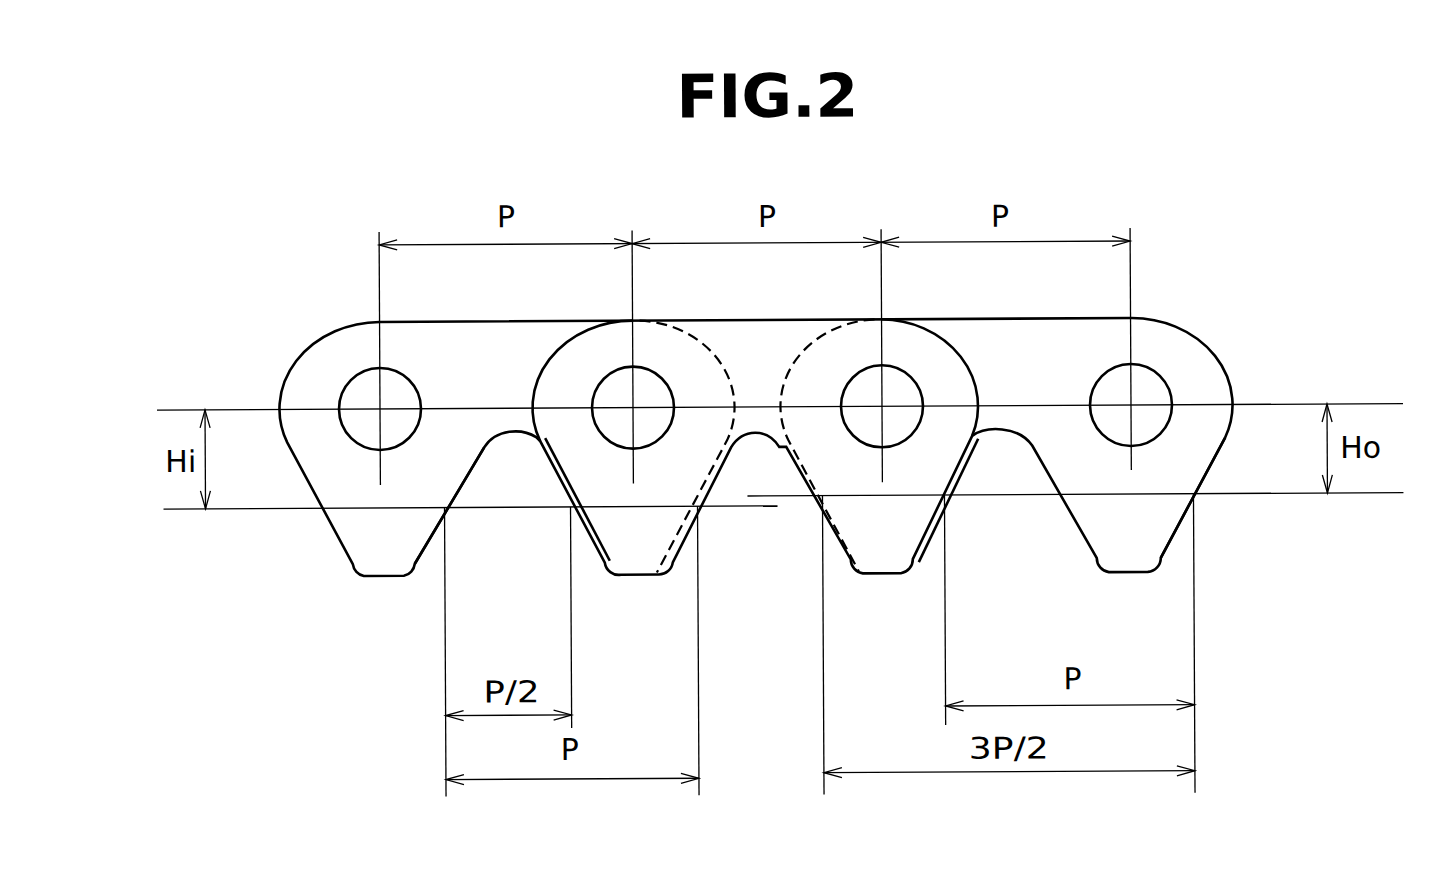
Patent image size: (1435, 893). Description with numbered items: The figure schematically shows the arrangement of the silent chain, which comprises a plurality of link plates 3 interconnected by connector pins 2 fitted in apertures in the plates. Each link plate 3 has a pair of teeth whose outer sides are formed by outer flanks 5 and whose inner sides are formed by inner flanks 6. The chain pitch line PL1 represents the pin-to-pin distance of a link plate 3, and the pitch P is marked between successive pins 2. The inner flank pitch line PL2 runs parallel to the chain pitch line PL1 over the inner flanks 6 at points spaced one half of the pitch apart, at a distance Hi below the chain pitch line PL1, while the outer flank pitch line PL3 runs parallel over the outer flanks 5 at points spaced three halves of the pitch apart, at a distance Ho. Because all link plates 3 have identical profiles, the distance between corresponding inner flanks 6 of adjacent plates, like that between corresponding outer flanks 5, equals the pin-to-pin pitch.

The connector pin 2 is at (352, 398).
The link plate 3 is at (350, 345).
The outer flank 5 is at (923, 541).
The inner flank 6 is at (423, 548).
The chain pitch line PL1 is at (463, 406).
The inner flank pitch line PL2 is at (347, 507).
The outer flank pitch line PL3 is at (1147, 496).